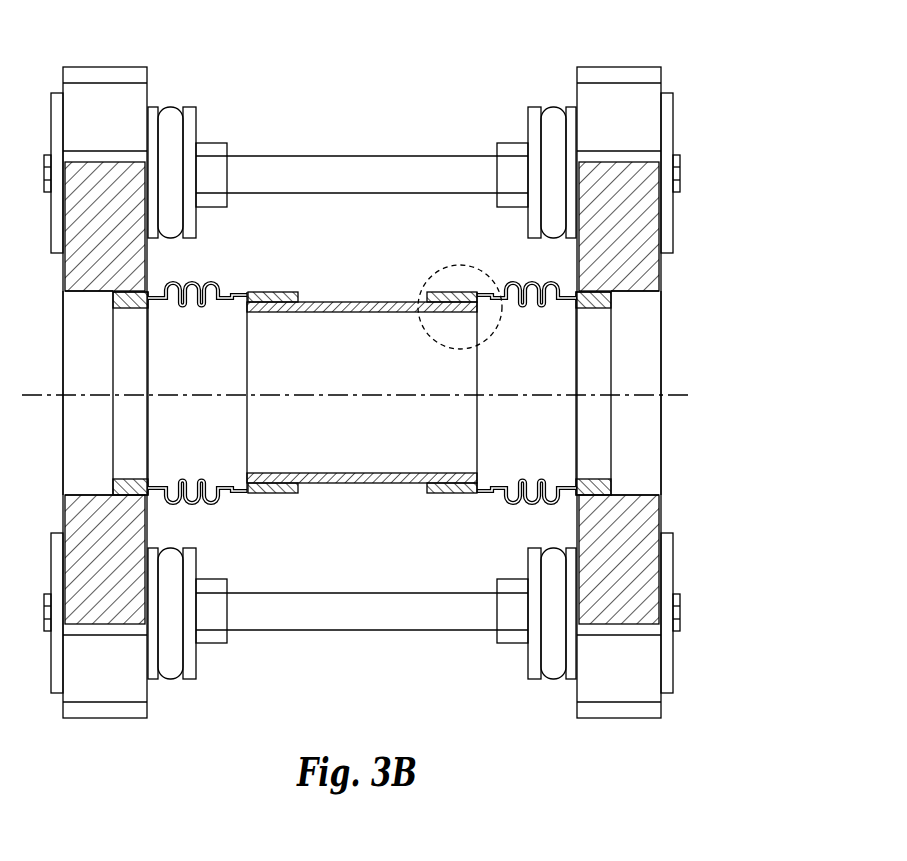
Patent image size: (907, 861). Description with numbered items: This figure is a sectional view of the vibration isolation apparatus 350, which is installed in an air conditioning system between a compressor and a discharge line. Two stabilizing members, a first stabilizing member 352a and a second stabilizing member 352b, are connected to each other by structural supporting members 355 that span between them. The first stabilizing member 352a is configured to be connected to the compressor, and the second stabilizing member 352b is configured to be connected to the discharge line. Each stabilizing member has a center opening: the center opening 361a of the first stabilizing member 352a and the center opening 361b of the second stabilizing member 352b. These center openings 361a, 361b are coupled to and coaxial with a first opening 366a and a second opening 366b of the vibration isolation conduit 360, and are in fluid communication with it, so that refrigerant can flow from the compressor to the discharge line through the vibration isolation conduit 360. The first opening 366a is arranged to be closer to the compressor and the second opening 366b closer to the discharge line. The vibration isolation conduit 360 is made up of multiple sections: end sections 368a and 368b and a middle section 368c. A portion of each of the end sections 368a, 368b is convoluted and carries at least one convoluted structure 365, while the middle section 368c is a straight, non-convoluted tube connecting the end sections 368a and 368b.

The vibration isolation apparatus 350 is at (729, 189).
The first stabilizing member 352a is at (102, 66).
The second stabilizing member 352b is at (638, 65).
The structural supporting members 355 is at (348, 156).
The vibration isolation conduit 360 is at (332, 485).
The center opening of the first stabilizing member 361a is at (90, 372).
The center opening of the second stabilizing member 361b is at (645, 372).
The convoluted structure 365 is at (207, 503).
The first opening 366a is at (133, 452).
The second opening 366b is at (602, 450).
The end section 368a is at (232, 292).
The end section 368b is at (502, 293).
The middle section 368c is at (395, 492).